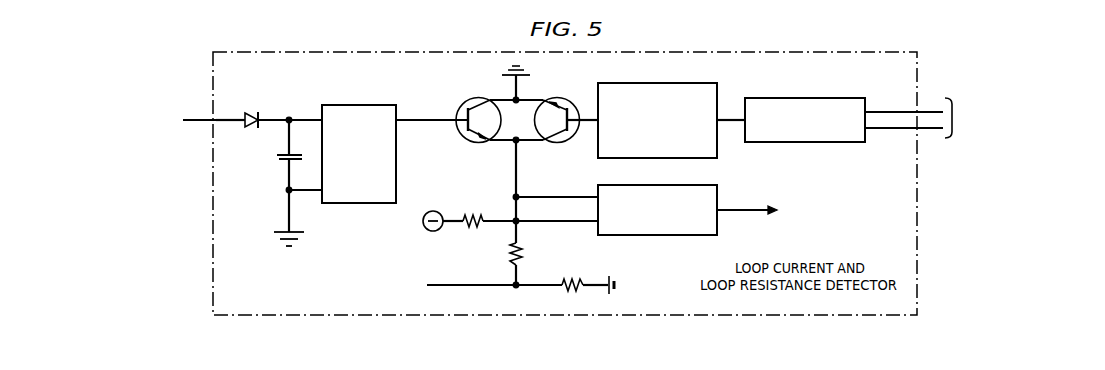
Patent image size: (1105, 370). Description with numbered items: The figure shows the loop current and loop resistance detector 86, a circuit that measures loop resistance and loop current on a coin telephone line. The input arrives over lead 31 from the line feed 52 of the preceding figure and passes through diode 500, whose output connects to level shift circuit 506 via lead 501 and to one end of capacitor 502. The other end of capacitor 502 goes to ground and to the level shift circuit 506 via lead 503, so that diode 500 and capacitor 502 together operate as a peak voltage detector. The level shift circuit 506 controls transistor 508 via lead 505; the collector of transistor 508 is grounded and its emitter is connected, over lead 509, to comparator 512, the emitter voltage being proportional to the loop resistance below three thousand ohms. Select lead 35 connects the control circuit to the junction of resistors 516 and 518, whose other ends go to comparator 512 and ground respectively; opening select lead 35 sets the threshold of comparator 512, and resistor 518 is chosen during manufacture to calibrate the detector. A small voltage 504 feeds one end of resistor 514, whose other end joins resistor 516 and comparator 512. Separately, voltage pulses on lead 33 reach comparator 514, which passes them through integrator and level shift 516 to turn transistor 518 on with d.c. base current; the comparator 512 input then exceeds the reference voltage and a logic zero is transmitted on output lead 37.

The lead 31 is at (225, 114).
The lead 33 is at (896, 138).
The select lead 35 is at (443, 288).
The output lead 37 is at (736, 208).
The line feed connection 52 is at (139, 119).
The loop current and loop resistance detector 86 is at (214, 257).
The diode 500 is at (256, 110).
The lead 501 is at (307, 116).
The capacitor 502 is at (275, 155).
The lead 503 is at (298, 192).
The small voltage 504 is at (431, 211).
The lead 505 is at (427, 118).
The level shift circuit 506 is at (360, 112).
The transistor 508 is at (478, 111).
The transistor output line 509 is at (516, 177).
The comparator 512 is at (657, 236).
The comparator 514 is at (808, 82).
The integrator and level shift 516 is at (735, 80).
The transistor 518 is at (567, 185).